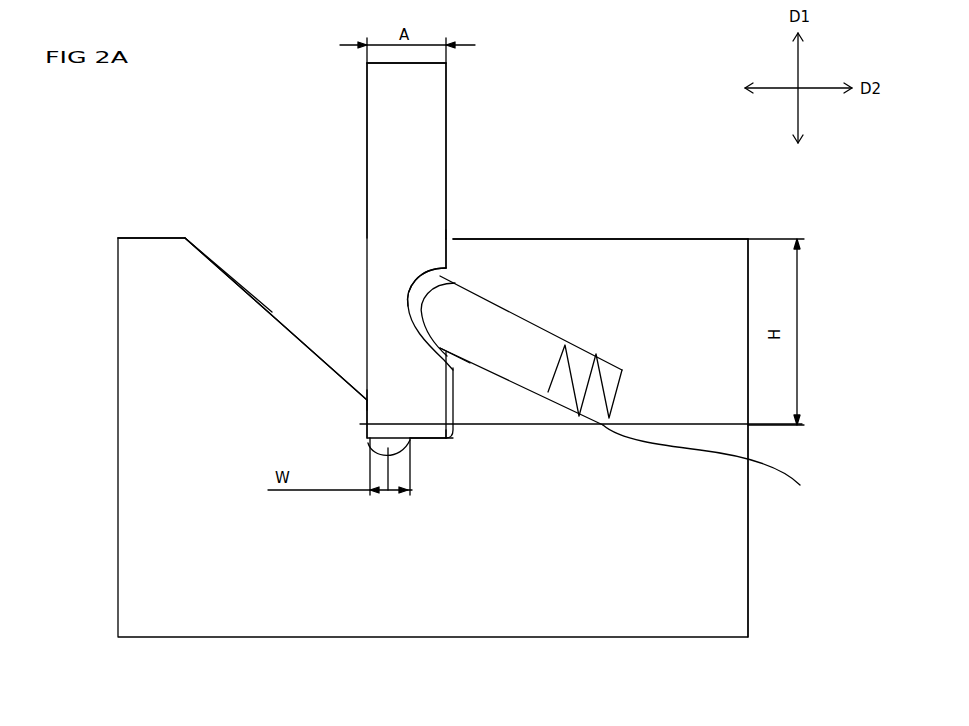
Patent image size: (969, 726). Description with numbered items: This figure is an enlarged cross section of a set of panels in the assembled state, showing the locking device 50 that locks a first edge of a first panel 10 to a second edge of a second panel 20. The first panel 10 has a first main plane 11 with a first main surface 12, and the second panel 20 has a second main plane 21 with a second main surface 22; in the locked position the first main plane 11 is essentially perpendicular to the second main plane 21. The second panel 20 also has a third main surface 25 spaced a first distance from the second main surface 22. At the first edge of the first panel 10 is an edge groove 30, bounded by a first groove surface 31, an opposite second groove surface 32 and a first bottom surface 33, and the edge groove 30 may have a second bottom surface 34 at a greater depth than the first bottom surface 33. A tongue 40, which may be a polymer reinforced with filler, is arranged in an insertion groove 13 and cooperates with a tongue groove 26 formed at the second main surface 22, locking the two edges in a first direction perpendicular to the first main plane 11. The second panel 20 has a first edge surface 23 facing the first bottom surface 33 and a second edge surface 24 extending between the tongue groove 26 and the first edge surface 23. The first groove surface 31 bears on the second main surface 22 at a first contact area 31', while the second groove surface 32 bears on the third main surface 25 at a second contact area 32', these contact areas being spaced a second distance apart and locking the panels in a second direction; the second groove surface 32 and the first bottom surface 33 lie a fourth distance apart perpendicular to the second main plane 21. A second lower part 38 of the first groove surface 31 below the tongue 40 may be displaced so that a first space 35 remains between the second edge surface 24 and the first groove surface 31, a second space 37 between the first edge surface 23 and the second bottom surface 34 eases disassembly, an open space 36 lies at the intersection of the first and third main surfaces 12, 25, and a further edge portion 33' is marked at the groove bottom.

The first panel 10 is at (700, 603).
The first main plane 11 is at (640, 239).
The first main surface 12 is at (690, 239).
The insertion groove 13 is at (712, 457).
The second panel 20 is at (385, 153).
The second main plane 21 is at (446, 108).
The second main surface 22 is at (446, 70).
The first edge surface 23 is at (412, 442).
The second edge surface 24 is at (453, 382).
The third main surface 25 is at (366, 95).
The tongue groove 26 is at (456, 288).
The edge groove 30 is at (294, 244).
The first groove surface 31 is at (483, 201).
The first contact area 31' is at (467, 179).
The second groove surface 32 is at (193, 410).
The second contact area 32' is at (412, 438).
The first bottom surface 33 is at (458, 568).
The lower corner edge 33' is at (429, 572).
The second bottom surface 34 is at (390, 450).
The first space 35 is at (460, 402).
The open space 36 is at (238, 254).
The second space 37 is at (369, 447).
The second lower part 38 is at (272, 312).
The tongue 40 is at (500, 327).
The locking device 50 is at (419, 281).